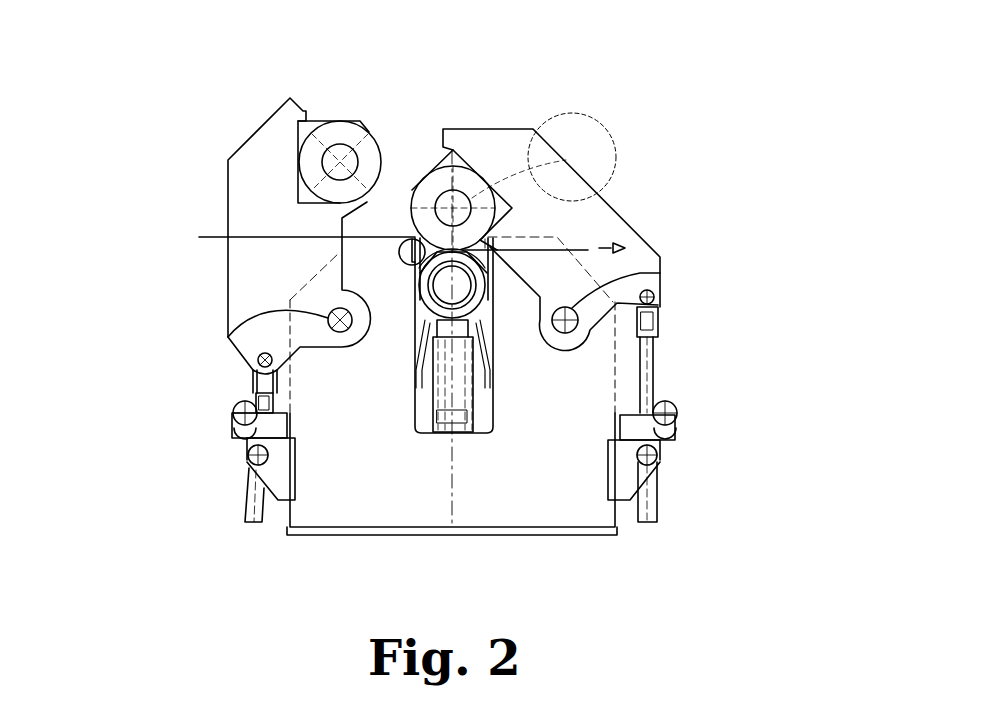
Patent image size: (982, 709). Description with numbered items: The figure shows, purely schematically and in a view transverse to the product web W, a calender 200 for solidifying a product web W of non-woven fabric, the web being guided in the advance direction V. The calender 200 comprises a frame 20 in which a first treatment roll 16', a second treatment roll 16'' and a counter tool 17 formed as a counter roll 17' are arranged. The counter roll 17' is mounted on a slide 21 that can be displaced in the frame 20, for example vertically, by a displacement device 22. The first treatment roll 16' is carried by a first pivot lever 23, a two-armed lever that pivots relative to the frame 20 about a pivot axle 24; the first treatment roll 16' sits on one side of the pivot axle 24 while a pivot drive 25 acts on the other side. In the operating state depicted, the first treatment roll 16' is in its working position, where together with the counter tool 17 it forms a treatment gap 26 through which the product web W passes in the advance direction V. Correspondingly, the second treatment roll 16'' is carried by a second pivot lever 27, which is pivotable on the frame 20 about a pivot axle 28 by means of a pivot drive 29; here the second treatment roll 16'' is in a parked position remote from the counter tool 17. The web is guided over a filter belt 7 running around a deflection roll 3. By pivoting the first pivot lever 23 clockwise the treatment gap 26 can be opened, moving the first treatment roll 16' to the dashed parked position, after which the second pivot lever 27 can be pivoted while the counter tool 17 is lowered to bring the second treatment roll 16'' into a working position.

The calender 200 is at (190, 131).
The second treatment roll 16'' is at (359, 108).
The first treatment roll 16' is at (513, 142).
The deflection roll 3 is at (408, 243).
The second pivot lever 27 is at (243, 203).
The first pivot lever 23 is at (610, 225).
The product web W is at (537, 248).
The advance direction V is at (613, 240).
The treatment gap 26 is at (497, 250).
The pivot axle 24 is at (660, 273).
The filter belt 7 is at (413, 262).
The slide 21 is at (492, 337).
The counter tool 17 is at (392, 336).
The counter roll 17' is at (452, 285).
The displacement device 22 is at (458, 393).
The frame 20 is at (527, 512).
The pivot axle 28 is at (228, 328).
The pivot drive 29 is at (232, 478).
The pivot drive 25 is at (702, 452).